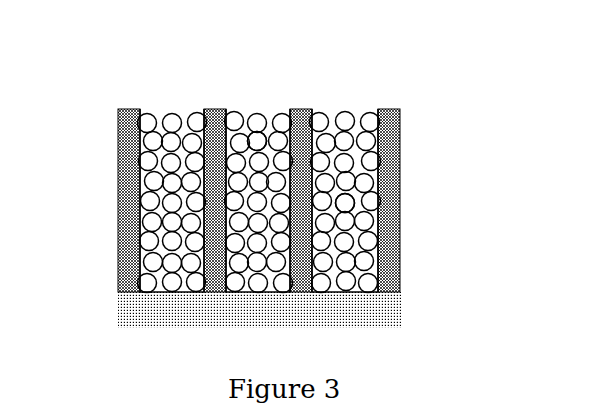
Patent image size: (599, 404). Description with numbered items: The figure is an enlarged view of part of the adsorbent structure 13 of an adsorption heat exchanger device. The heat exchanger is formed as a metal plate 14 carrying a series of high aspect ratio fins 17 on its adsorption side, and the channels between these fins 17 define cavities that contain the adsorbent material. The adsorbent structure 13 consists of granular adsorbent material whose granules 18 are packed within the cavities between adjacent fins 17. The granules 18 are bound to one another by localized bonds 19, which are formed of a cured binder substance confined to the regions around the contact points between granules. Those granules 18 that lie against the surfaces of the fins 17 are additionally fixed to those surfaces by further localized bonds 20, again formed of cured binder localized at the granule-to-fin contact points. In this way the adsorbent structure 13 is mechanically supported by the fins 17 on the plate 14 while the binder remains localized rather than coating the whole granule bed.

The adsorbent structure 13 is at (342, 196).
The metal plate 14 is at (400, 316).
The fins 17 is at (130, 128).
The granules 18 is at (240, 120).
The localized bonds 19 is at (357, 118).
The additional localized bonds 20 is at (142, 118).